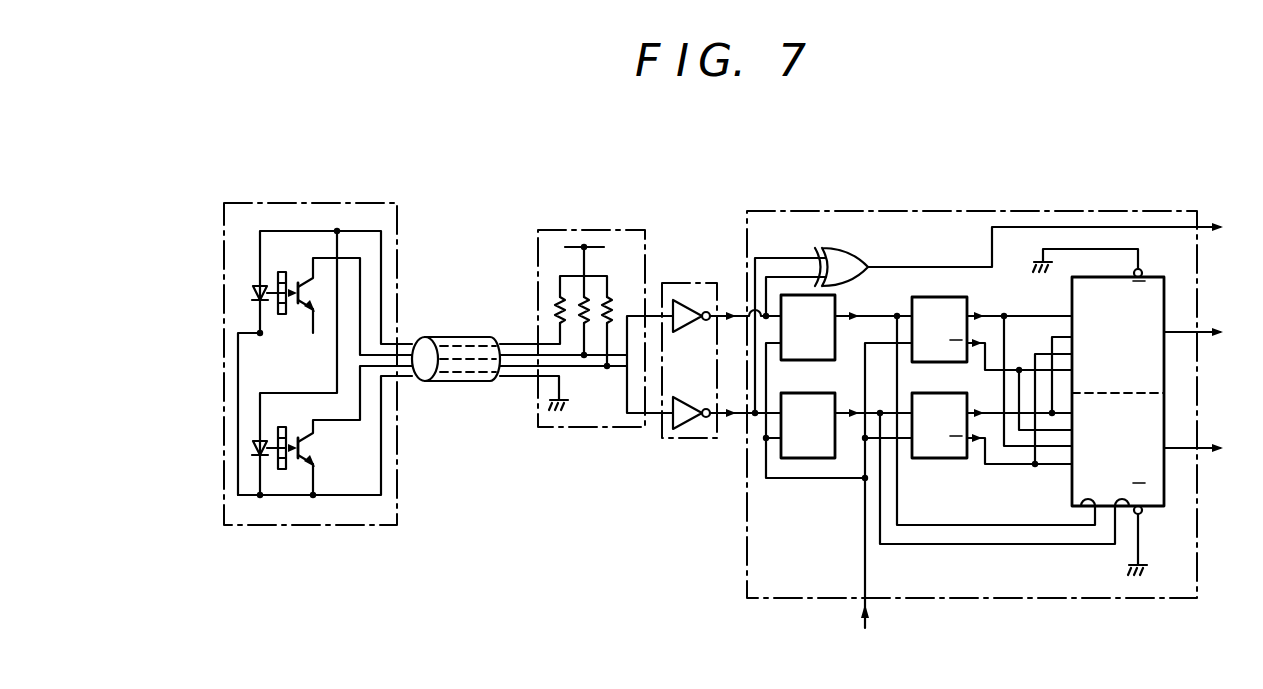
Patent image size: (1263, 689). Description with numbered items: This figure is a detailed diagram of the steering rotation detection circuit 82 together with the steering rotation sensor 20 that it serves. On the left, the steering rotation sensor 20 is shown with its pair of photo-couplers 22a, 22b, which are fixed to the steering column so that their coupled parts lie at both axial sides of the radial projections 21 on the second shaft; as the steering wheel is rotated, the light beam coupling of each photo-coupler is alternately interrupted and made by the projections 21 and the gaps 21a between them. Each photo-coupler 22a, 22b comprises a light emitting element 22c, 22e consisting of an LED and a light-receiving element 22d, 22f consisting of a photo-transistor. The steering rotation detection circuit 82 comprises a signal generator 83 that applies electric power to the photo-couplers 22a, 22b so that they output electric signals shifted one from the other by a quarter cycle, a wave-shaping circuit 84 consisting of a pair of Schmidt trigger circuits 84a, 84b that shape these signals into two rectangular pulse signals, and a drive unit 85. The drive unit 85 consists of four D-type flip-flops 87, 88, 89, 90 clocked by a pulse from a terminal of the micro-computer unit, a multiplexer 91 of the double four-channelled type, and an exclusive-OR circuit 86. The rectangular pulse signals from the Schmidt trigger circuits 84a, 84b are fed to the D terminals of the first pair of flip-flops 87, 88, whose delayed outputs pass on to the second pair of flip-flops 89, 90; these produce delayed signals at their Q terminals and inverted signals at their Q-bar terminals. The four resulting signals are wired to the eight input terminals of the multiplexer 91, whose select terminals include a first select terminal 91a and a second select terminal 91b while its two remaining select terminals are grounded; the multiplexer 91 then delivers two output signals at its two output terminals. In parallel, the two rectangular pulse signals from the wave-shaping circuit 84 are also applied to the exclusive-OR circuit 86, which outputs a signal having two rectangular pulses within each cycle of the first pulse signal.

The steering rotation sensor 20 is at (366, 204).
The radial projections 21 is at (278, 288).
The gaps 21a is at (278, 297).
The photo-coupler 22a is at (250, 228).
The photo-coupler 22b is at (271, 503).
The light emitting element 22c is at (254, 294).
The light-receiving element 22d is at (318, 303).
The light emitting element 22e is at (254, 451).
The light-receiving element 22f is at (303, 450).
The steering rotation detection circuit 82 is at (604, 552).
The signal generator 83 is at (582, 228).
The wave-shaping circuit 84 is at (683, 282).
The Schmidt trigger circuit 84a is at (697, 328).
The Schmidt trigger circuit 84b is at (696, 431).
The drive unit 85 is at (977, 210).
The exclusive-OR circuit 86 is at (852, 263).
The flip-flop 87 is at (812, 361).
The flip-flop 88 is at (808, 459).
The flip-flop 89 is at (940, 296).
The flip-flop 90 is at (952, 459).
The multiplexer 91 is at (1158, 276).
The select terminal 91a is at (1080, 500).
The select terminal 91b is at (1128, 508).